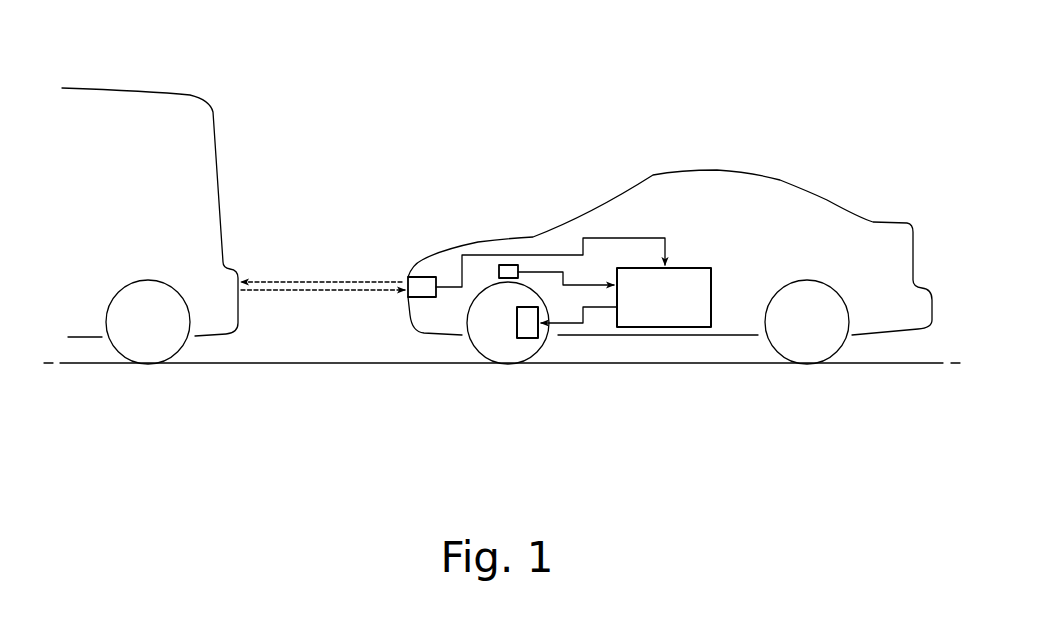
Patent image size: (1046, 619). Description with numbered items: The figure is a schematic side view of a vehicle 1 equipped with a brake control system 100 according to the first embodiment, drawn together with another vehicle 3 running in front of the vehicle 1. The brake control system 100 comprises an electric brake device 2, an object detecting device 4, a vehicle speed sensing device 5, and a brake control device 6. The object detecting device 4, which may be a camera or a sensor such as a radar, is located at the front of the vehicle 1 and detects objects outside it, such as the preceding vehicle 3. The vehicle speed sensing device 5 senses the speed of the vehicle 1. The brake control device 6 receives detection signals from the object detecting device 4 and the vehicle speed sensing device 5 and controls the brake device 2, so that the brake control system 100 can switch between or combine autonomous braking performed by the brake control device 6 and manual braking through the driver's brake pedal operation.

The vehicle 1 is at (807, 188).
The electric brake device 2 is at (530, 339).
The another vehicle 3 is at (152, 90).
The object detecting device 4 is at (422, 276).
The vehicle speed sensing device 5 is at (509, 265).
The brake control device 6 is at (660, 328).
The brake control system 100 is at (664, 207).